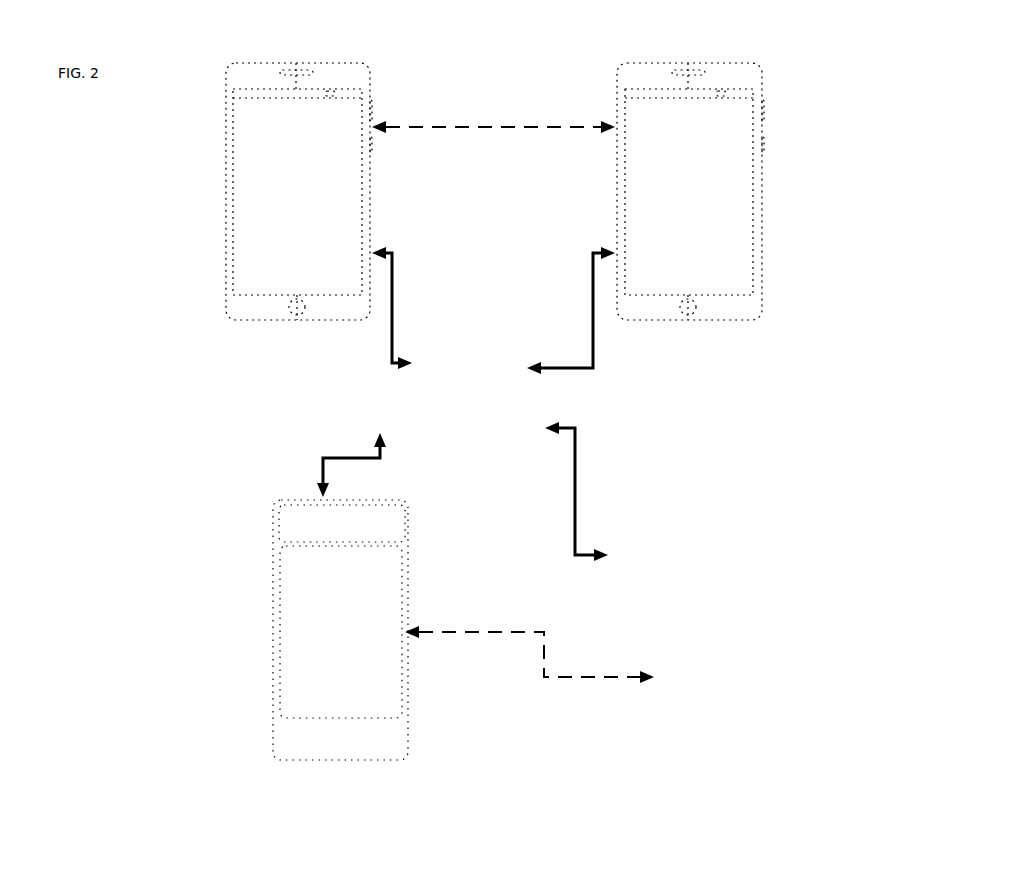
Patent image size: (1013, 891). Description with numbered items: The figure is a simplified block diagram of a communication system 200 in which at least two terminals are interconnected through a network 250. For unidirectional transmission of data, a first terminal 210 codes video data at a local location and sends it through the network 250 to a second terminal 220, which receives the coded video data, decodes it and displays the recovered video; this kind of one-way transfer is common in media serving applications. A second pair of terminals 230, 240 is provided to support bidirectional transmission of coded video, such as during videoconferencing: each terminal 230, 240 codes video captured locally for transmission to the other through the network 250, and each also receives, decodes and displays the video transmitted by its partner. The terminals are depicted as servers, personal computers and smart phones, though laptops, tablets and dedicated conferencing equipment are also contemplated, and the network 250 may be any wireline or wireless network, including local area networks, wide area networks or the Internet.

The communication system 200 is at (528, 413).
The first terminal 210 is at (812, 458).
The second terminal 220 is at (408, 722).
The terminal 230 is at (226, 147).
The terminal 240 is at (617, 147).
The network 250 is at (446, 391).